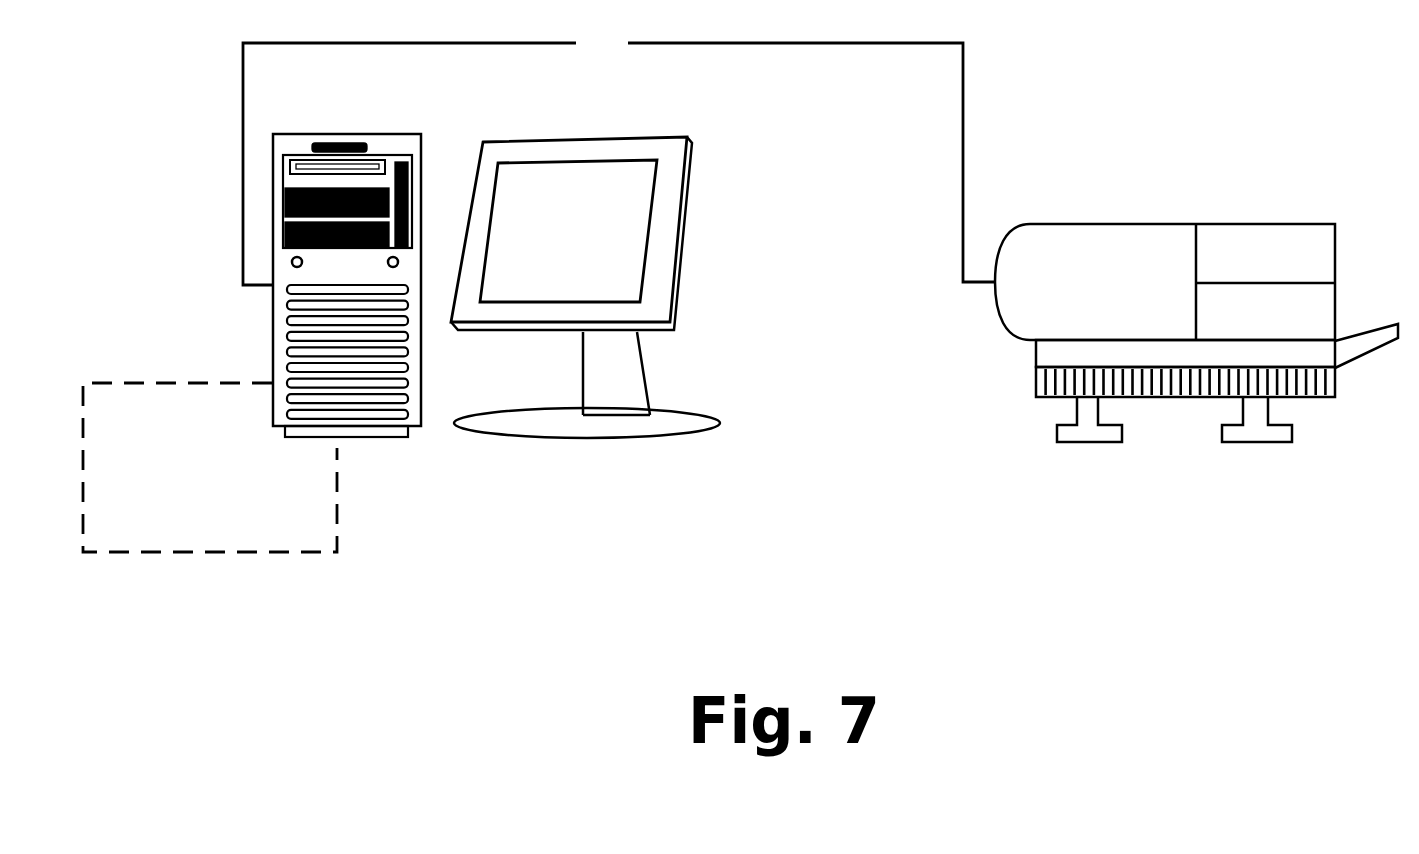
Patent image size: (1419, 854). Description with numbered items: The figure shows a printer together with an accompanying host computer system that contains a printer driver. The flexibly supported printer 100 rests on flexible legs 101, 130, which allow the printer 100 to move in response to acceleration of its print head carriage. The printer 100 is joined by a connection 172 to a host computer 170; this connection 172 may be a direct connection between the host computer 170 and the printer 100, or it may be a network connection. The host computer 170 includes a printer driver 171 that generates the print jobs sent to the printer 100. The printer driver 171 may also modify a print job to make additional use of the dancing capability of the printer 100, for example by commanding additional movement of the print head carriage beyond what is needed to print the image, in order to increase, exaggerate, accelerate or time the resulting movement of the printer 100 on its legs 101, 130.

The printer 100 is at (1177, 233).
The flexible leg 101 is at (1262, 430).
The flexible leg 130 is at (1090, 432).
The host computer 170 is at (463, 470).
The printer driver 171 is at (210, 467).
The connection 172 is at (619, 159).